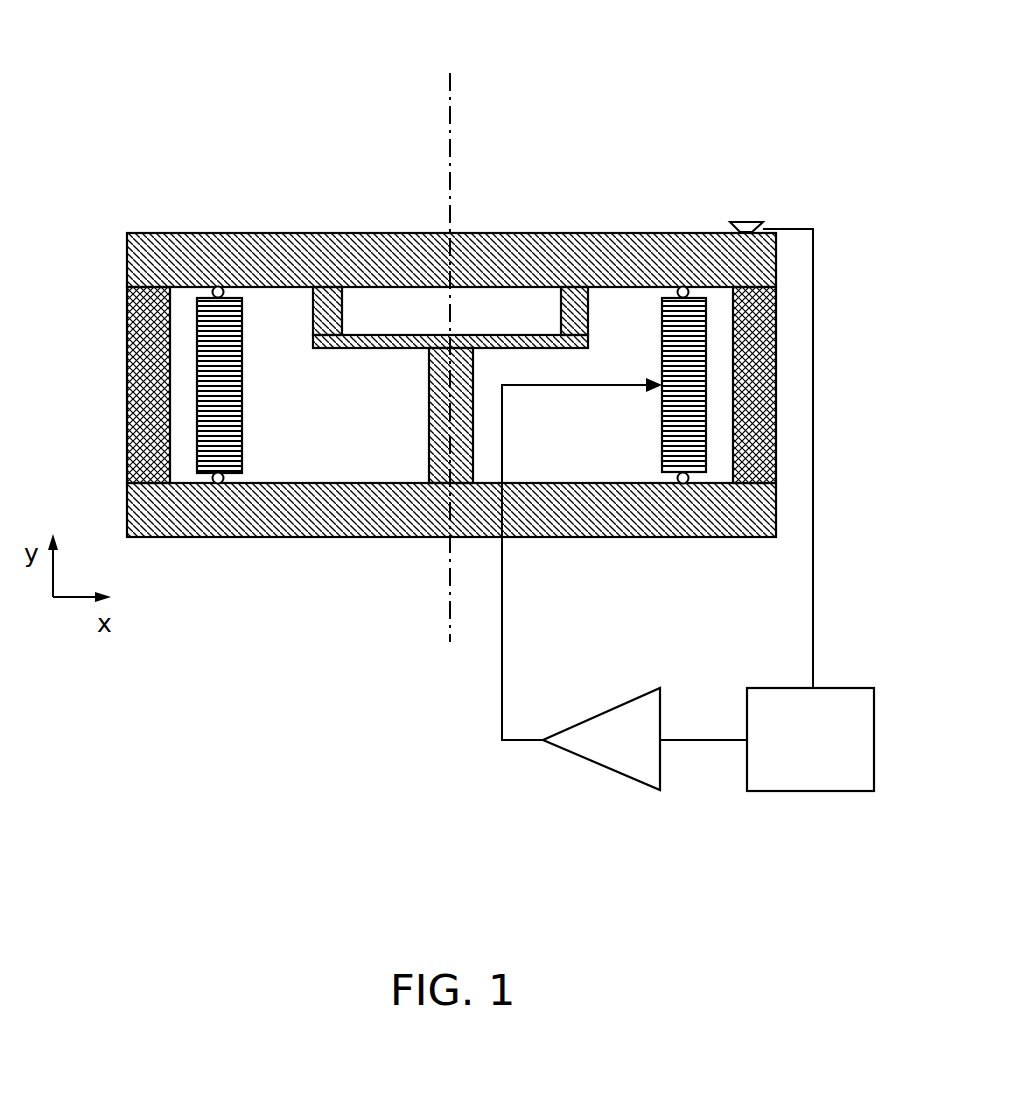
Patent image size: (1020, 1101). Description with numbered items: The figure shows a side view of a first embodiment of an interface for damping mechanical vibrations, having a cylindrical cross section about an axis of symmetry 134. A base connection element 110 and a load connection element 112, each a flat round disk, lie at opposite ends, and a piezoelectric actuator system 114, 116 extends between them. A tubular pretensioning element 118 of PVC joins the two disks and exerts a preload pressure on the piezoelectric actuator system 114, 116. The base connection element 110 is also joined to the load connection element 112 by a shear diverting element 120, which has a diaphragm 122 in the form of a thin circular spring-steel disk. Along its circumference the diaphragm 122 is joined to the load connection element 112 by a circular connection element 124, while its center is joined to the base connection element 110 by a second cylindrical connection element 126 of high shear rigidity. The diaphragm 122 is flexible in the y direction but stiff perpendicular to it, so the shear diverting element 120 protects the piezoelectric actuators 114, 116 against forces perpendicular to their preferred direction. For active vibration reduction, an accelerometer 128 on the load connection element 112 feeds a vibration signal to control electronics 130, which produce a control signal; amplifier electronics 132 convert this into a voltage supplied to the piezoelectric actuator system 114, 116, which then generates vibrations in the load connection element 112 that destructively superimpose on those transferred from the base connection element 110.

The base connection element 110 is at (188, 522).
The load connection element 112 is at (604, 246).
The piezoelectric actuator 114 is at (202, 336).
The piezoelectric actuator 116 is at (662, 441).
The tubular pretensioning element 118 is at (137, 412).
The shear diverting element 120 is at (423, 335).
The diaphragm 122 is at (380, 332).
The circular connection element 124 is at (314, 304).
The second cylindrical connection element 126 is at (430, 441).
The accelerometer 128 is at (747, 221).
The control electronics 130 is at (793, 770).
The amplifier electronics 132 is at (596, 748).
The axis of symmetry 134 is at (450, 76).